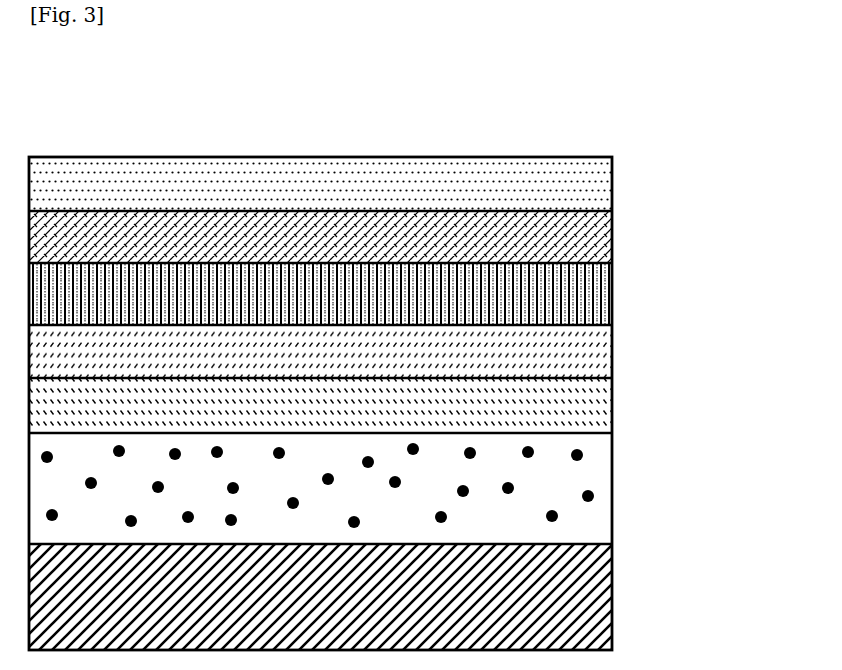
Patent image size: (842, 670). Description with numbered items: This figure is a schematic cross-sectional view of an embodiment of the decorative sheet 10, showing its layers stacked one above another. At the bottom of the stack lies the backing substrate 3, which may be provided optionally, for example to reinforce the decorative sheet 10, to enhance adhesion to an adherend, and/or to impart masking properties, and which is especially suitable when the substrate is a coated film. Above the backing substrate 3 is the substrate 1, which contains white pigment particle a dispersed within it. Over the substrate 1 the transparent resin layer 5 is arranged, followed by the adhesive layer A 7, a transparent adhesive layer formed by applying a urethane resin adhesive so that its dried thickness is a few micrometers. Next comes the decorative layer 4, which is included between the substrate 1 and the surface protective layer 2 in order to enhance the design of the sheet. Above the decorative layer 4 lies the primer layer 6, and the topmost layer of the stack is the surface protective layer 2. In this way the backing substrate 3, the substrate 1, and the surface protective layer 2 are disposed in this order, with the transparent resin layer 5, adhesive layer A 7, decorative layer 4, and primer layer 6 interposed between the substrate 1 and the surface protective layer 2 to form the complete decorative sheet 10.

The decorative sheet 10 is at (597, 148).
The surface protective layer 2 is at (612, 180).
The primer layer 6 is at (612, 234).
The decorative layer 4 is at (612, 292).
The adhesive layer A 7 is at (612, 348).
The transparent resin layer 5 is at (612, 403).
The substrate 1 is at (612, 485).
The white pigment particle a is at (594, 498).
The backing substrate 3 is at (612, 593).